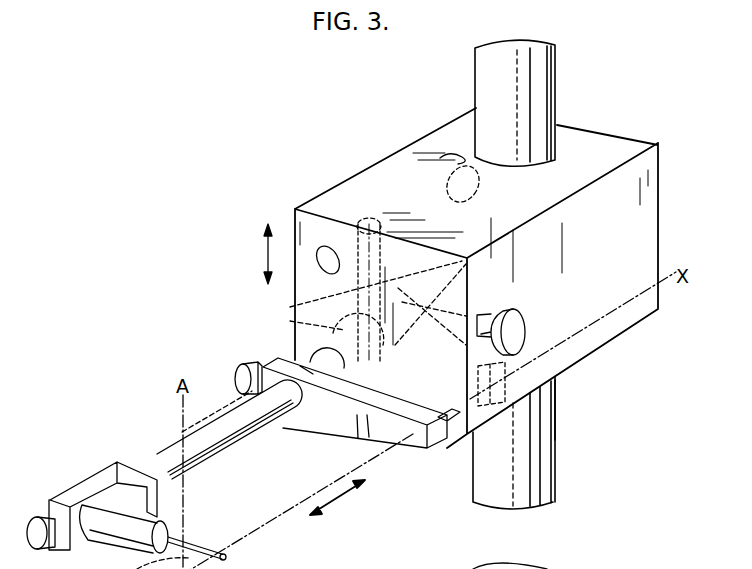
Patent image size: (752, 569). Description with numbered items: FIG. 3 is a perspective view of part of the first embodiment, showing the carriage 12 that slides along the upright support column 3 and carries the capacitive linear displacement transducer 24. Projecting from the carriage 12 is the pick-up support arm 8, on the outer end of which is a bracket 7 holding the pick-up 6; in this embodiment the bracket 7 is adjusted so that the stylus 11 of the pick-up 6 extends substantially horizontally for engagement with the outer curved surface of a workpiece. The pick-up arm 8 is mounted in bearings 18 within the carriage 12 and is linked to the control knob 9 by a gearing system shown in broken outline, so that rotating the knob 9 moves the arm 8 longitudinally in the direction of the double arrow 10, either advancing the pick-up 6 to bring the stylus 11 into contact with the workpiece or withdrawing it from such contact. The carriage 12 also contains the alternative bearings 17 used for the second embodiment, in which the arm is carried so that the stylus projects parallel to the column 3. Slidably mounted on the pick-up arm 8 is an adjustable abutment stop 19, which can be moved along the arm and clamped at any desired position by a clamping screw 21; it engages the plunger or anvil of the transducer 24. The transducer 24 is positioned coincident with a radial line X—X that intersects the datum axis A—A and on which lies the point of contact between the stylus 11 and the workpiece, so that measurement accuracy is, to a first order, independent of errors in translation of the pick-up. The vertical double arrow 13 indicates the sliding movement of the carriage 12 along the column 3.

The upright support column 3 is at (522, 447).
The pick-up 6 is at (127, 530).
The bracket 7 is at (114, 461).
The pick-up support arm 8 is at (163, 458).
The control knob 9 is at (512, 336).
The double arrow 10 is at (343, 496).
The stylus 11 is at (228, 556).
The carriage 12 is at (632, 195).
The direction of vertical movement 13 is at (264, 238).
The alternative bearings 17 is at (365, 222).
The bearings 18 is at (290, 307).
The adjustable abutment stop 19 is at (305, 400).
The clamping screw 21 is at (240, 373).
The capacitive linear displacement transducer 24 is at (553, 412).